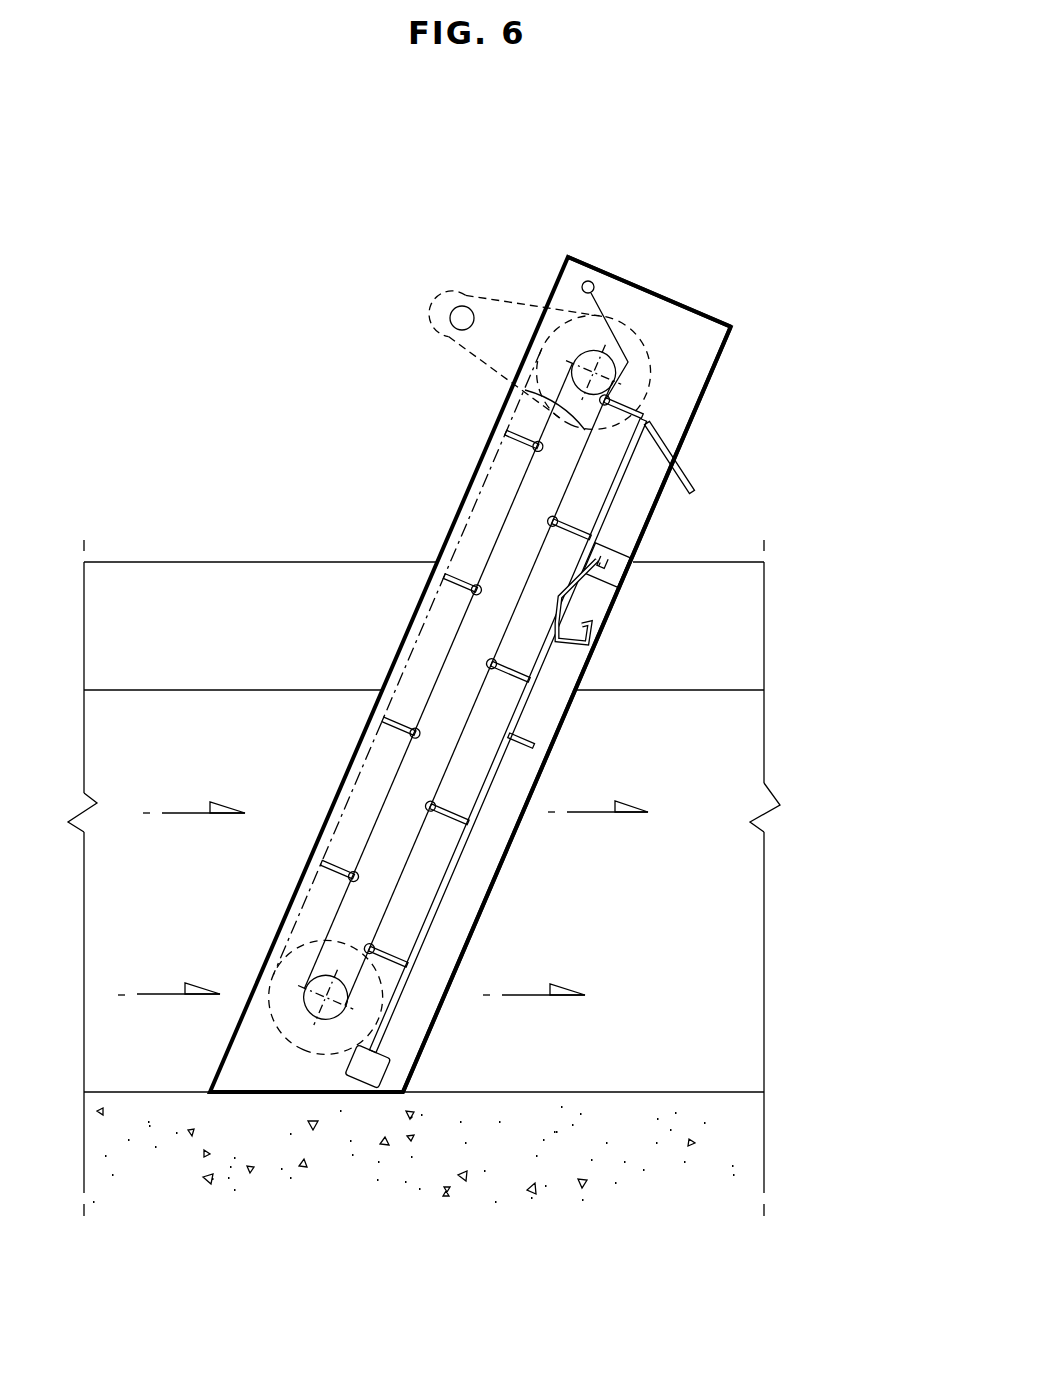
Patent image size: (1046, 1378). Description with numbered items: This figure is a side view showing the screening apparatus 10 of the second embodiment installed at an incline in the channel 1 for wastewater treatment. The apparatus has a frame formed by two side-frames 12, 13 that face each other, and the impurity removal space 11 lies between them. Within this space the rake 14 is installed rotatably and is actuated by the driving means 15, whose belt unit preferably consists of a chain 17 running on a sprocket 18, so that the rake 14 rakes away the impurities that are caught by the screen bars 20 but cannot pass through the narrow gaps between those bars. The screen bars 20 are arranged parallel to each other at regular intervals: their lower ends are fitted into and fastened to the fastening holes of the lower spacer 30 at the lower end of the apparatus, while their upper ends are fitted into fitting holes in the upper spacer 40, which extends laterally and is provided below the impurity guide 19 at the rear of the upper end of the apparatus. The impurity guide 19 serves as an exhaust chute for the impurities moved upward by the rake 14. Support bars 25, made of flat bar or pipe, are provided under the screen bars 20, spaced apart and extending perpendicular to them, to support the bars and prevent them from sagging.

The channel 1 is at (645, 899).
The screening apparatus 10 is at (578, 213).
The impurity removal space 11 is at (427, 662).
The side-frame 12 is at (662, 315).
The side-frame 13 is at (582, 642).
The rake 14 is at (505, 434).
The driving means 15 is at (434, 307).
The chain 17 is at (492, 550).
The sprocket 18 is at (590, 365).
The impurity guide 19 is at (693, 470).
The screen bars 20 is at (533, 665).
The support bars 25 is at (532, 742).
The lower spacer 30 is at (367, 1075).
The upper spacer 40 is at (622, 576).